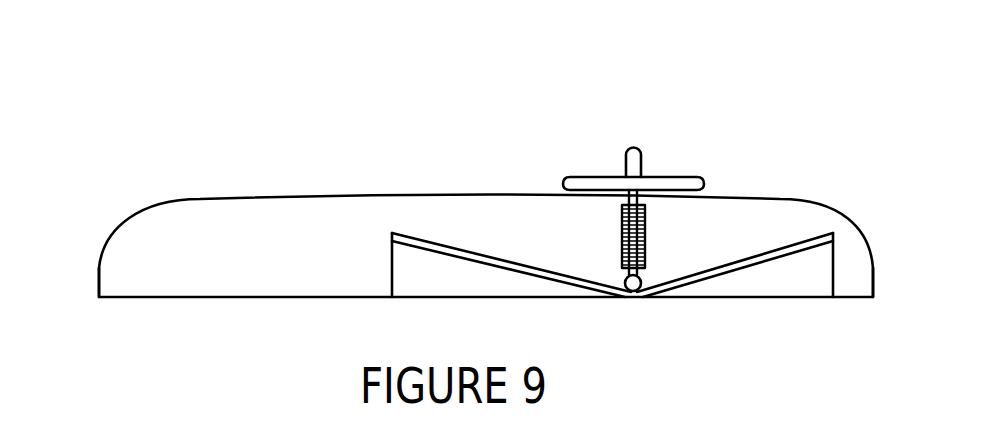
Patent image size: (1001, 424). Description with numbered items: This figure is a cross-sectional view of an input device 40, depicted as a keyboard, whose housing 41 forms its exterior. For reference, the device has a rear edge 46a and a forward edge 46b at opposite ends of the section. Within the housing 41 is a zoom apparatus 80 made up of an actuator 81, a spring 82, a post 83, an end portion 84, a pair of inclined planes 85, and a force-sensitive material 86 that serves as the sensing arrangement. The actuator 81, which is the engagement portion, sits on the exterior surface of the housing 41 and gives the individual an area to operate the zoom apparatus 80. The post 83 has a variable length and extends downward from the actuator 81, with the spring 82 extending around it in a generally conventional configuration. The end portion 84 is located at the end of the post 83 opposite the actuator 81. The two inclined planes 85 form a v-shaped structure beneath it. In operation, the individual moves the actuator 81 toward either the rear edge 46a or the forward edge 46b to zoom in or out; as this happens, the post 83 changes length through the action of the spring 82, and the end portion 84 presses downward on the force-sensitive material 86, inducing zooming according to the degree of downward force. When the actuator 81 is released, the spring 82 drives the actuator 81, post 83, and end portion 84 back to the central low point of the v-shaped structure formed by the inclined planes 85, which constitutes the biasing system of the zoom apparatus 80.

The input device 40 is at (486, 189).
The housing 41 is at (229, 199).
The rear edge 46a is at (874, 272).
The forward edge 46b is at (98, 272).
The zoom apparatus 80 is at (612, 189).
The actuator 81 is at (641, 162).
The spring 82 is at (622, 228).
The post 83 is at (642, 203).
The end portion 84 is at (643, 283).
The inclined planes 85 is at (468, 259).
The force-sensitive material 86 is at (428, 238).